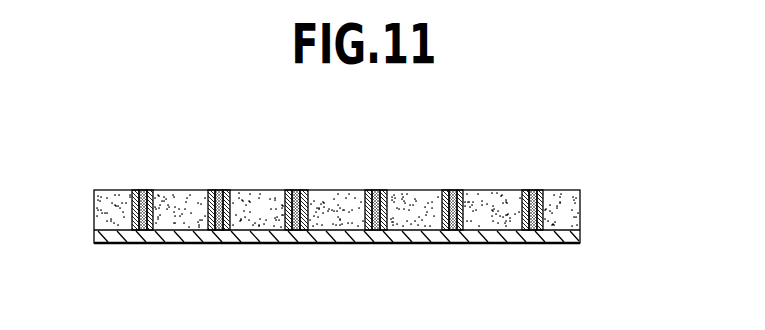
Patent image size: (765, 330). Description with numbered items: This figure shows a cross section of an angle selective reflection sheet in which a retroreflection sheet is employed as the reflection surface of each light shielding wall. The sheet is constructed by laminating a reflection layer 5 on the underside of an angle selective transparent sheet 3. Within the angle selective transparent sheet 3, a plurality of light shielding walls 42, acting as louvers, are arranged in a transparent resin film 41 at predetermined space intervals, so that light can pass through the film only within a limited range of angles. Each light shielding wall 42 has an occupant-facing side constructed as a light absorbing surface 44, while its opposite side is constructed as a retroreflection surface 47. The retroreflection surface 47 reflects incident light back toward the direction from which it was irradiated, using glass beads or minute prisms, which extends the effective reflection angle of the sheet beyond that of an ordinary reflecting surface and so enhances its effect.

The angle selective transparent sheet 3 is at (580, 210).
The reflection layer 5 is at (553, 243).
The transparent resin film 41 is at (176, 200).
The light shielding wall 42 is at (378, 203).
The light absorbing surface 44 is at (389, 203).
The retroreflection surface 47 is at (363, 208).